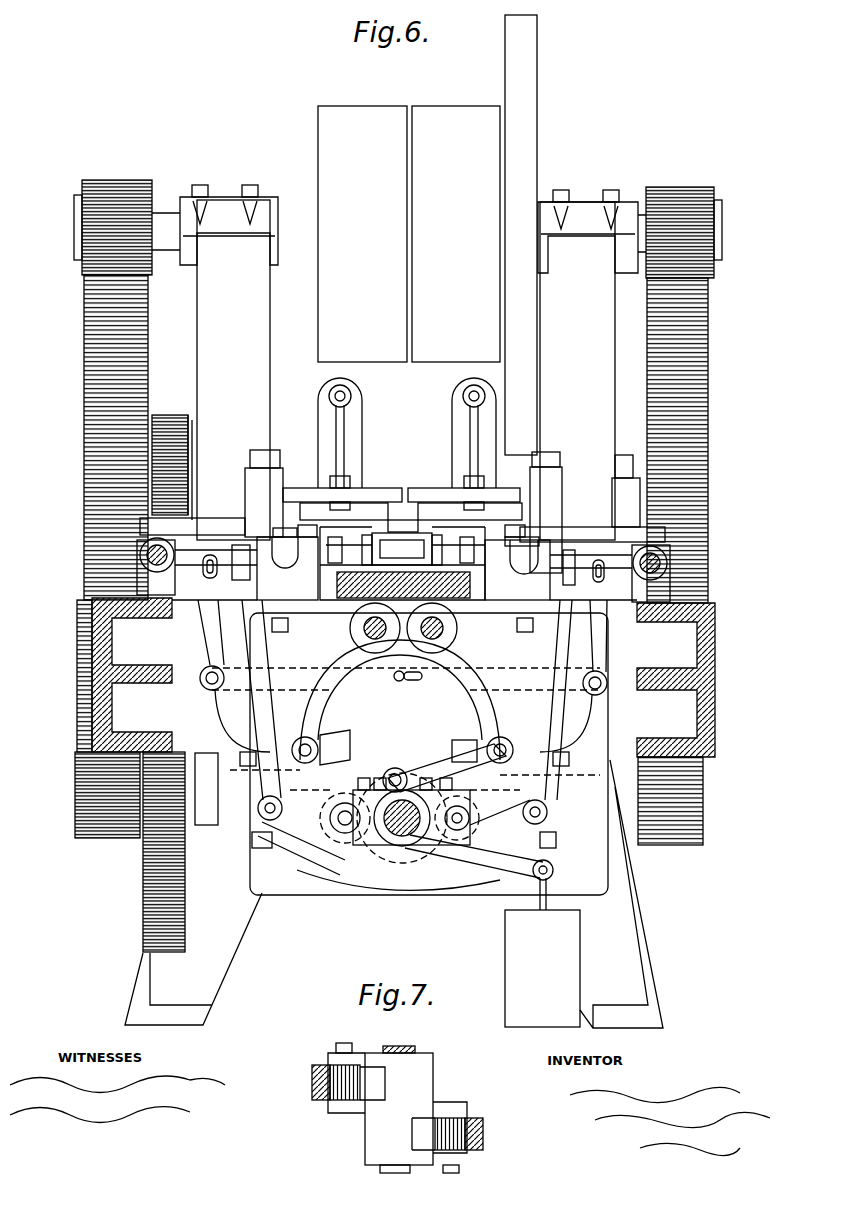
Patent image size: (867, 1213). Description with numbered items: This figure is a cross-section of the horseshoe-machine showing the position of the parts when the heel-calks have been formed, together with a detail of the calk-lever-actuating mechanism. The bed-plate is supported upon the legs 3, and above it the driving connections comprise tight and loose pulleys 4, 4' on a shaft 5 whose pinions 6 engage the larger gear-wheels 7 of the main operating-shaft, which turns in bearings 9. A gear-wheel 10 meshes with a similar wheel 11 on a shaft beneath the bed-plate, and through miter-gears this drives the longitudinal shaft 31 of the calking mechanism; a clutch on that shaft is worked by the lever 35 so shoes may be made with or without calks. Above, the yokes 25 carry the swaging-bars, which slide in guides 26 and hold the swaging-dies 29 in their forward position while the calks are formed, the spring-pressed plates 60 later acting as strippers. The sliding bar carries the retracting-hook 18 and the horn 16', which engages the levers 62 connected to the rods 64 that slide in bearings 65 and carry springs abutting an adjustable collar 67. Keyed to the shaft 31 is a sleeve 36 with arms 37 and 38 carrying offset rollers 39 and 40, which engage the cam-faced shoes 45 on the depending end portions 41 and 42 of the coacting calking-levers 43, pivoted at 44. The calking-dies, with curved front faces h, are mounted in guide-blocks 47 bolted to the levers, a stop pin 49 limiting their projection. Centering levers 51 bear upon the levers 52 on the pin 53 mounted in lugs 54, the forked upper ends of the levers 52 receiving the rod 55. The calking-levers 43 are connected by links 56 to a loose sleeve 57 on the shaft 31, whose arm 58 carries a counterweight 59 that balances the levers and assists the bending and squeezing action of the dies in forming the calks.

In FIG. 6, the legs 3 is at (143, 968).
In FIG. 6, the tight pulley 4 is at (474, 235).
In FIG. 6, the loose pulley 4' is at (362, 234).
In FIG. 6, the shaft 5 is at (409, 229).
In FIG. 6, the pinions 6 is at (115, 182).
In FIG. 6, the gear-wheels 7 is at (84, 440).
In FIG. 6, the bearings 9 is at (197, 497).
In FIG. 6, the gear-wheel 10 is at (170, 418).
In FIG. 6, the gear-wheel 11 is at (155, 862).
In FIG. 6, the horn or lug 16' is at (402, 520).
In FIG. 6, the retracting-hook 18 is at (402, 549).
In FIG. 6, the yokes 25 is at (362, 424).
In FIG. 6, the guides 26 is at (411, 515).
In FIG. 6, the swaging-dies 29 is at (308, 524).
In FIG. 6, the longitudinal shaft 31 is at (410, 846).
In FIG. 7, the longitudinal shaft 31 is at (415, 1050).
In FIG. 6, the lever 35 is at (130, 838).
In FIG. 7, the sleeve 36 is at (399, 1109).
In FIG. 6, the arm 37 is at (395, 768).
In FIG. 7, the arm 37 is at (333, 1062).
In FIG. 6, the arm 38 is at (462, 846).
In FIG. 7, the arm 38 is at (467, 1112).
In FIG. 6, the roller 39 is at (348, 803).
In FIG. 7, the roller 39 is at (330, 1100).
In FIG. 6, the roller 40 is at (458, 806).
In FIG. 7, the roller 40 is at (462, 1148).
In FIG. 6, the depending end portion 41 is at (293, 848).
In FIG. 6, the depending end portion 42 is at (510, 875).
In FIG. 6, the calking-levers 43 is at (402, 700).
In FIG. 6, the pivots 44 is at (422, 638).
In FIG. 6, the cam-faced shoes 45 is at (340, 740).
In FIG. 7, the cam-faced shoes 45 is at (312, 1080).
In FIG. 6, the guide-blocks 47 is at (403, 568).
In FIG. 6, the stop pin or screw 49 is at (273, 528).
In FIG. 6, the levers 51 is at (380, 678).
In FIG. 6, the levers 52 is at (205, 628).
In FIG. 6, the pin or shaft 53 is at (204, 688).
In FIG. 6, the lugs 54 is at (232, 700).
In FIG. 6, the rod 55 is at (222, 565).
In FIG. 6, the links 56 is at (430, 760).
In FIG. 6, the sleeve 57 is at (398, 848).
In FIG. 6, the arm 58 is at (530, 875).
In FIG. 6, the counterweight 59 is at (542, 952).
In FIG. 6, the spring-pressed plates 60 is at (368, 535).
In FIG. 6, the levers 62 is at (388, 497).
In FIG. 6, the rods 64 is at (140, 553).
In FIG. 6, the bearings 65 is at (403, 571).
In FIG. 6, the adjustable collar 67 is at (147, 560).
In FIG. 6, the curved front face h is at (328, 565).